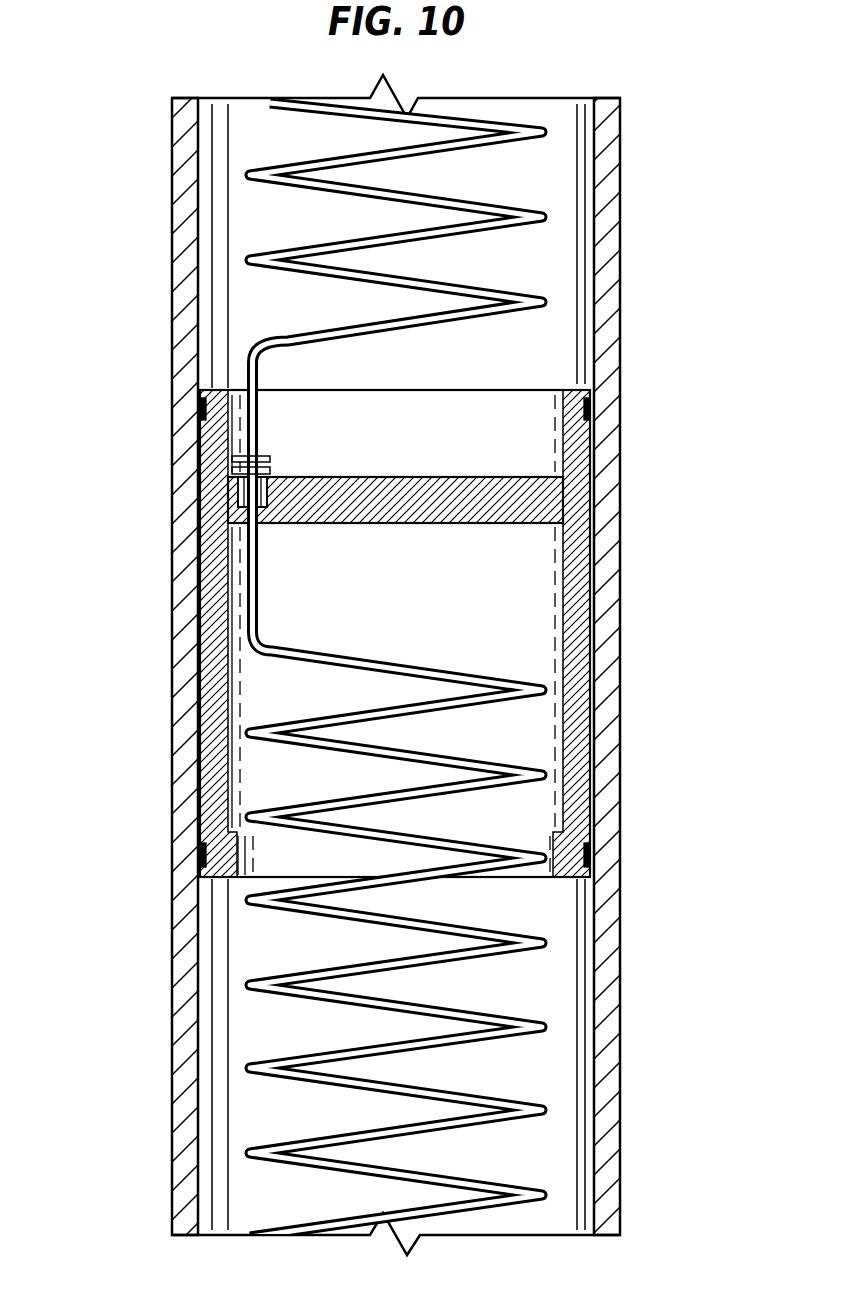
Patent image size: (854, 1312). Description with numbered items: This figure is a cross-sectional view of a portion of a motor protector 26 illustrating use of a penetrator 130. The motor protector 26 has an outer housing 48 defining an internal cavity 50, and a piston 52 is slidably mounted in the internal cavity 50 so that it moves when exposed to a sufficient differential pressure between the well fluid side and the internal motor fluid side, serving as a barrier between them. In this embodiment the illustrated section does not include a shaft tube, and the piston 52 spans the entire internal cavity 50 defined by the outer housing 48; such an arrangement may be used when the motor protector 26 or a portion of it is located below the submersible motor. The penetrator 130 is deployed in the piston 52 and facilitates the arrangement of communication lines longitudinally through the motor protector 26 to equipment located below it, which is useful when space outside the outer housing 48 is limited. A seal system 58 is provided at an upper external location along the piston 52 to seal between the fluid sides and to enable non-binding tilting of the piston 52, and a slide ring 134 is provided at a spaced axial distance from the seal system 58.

The motor protector 26 is at (422, 665).
The outer housing 48 is at (170, 312).
The internal cavity 50 is at (553, 169).
The piston 52 is at (565, 497).
The seal system 58 is at (178, 405).
The penetrator 130 is at (238, 488).
The slide ring 134 is at (180, 861).